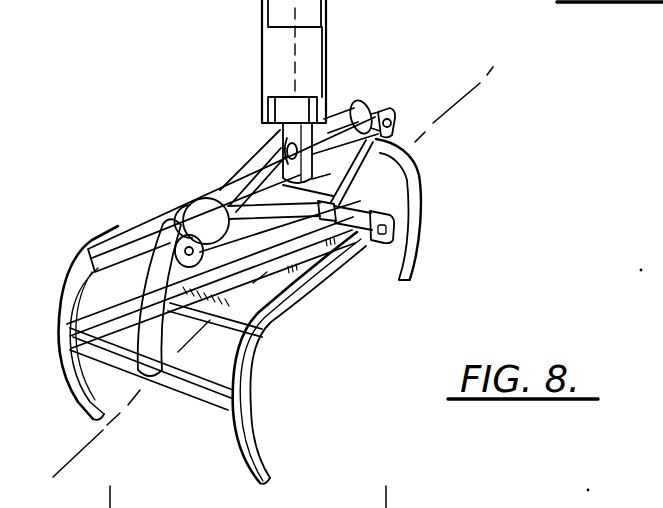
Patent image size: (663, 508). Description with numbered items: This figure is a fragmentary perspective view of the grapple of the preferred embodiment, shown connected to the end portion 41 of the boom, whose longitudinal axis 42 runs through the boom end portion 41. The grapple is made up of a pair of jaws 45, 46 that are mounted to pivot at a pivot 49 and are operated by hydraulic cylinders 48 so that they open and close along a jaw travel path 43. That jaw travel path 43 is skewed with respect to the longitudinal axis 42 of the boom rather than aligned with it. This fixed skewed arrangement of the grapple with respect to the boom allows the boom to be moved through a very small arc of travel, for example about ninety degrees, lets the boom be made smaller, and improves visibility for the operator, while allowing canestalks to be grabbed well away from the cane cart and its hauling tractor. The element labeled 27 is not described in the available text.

The mast 27 is at (394, 5).
The end portion of boom 41 is at (326, 73).
The longitudinal axis of boom 42 is at (221, 0).
The jaw travel path 43 is at (457, 98).
The jaw 45 is at (253, 377).
The jaw 46 is at (415, 232).
The hydraulic cylinder 48 is at (340, 100).
The pivot 49 is at (380, 243).